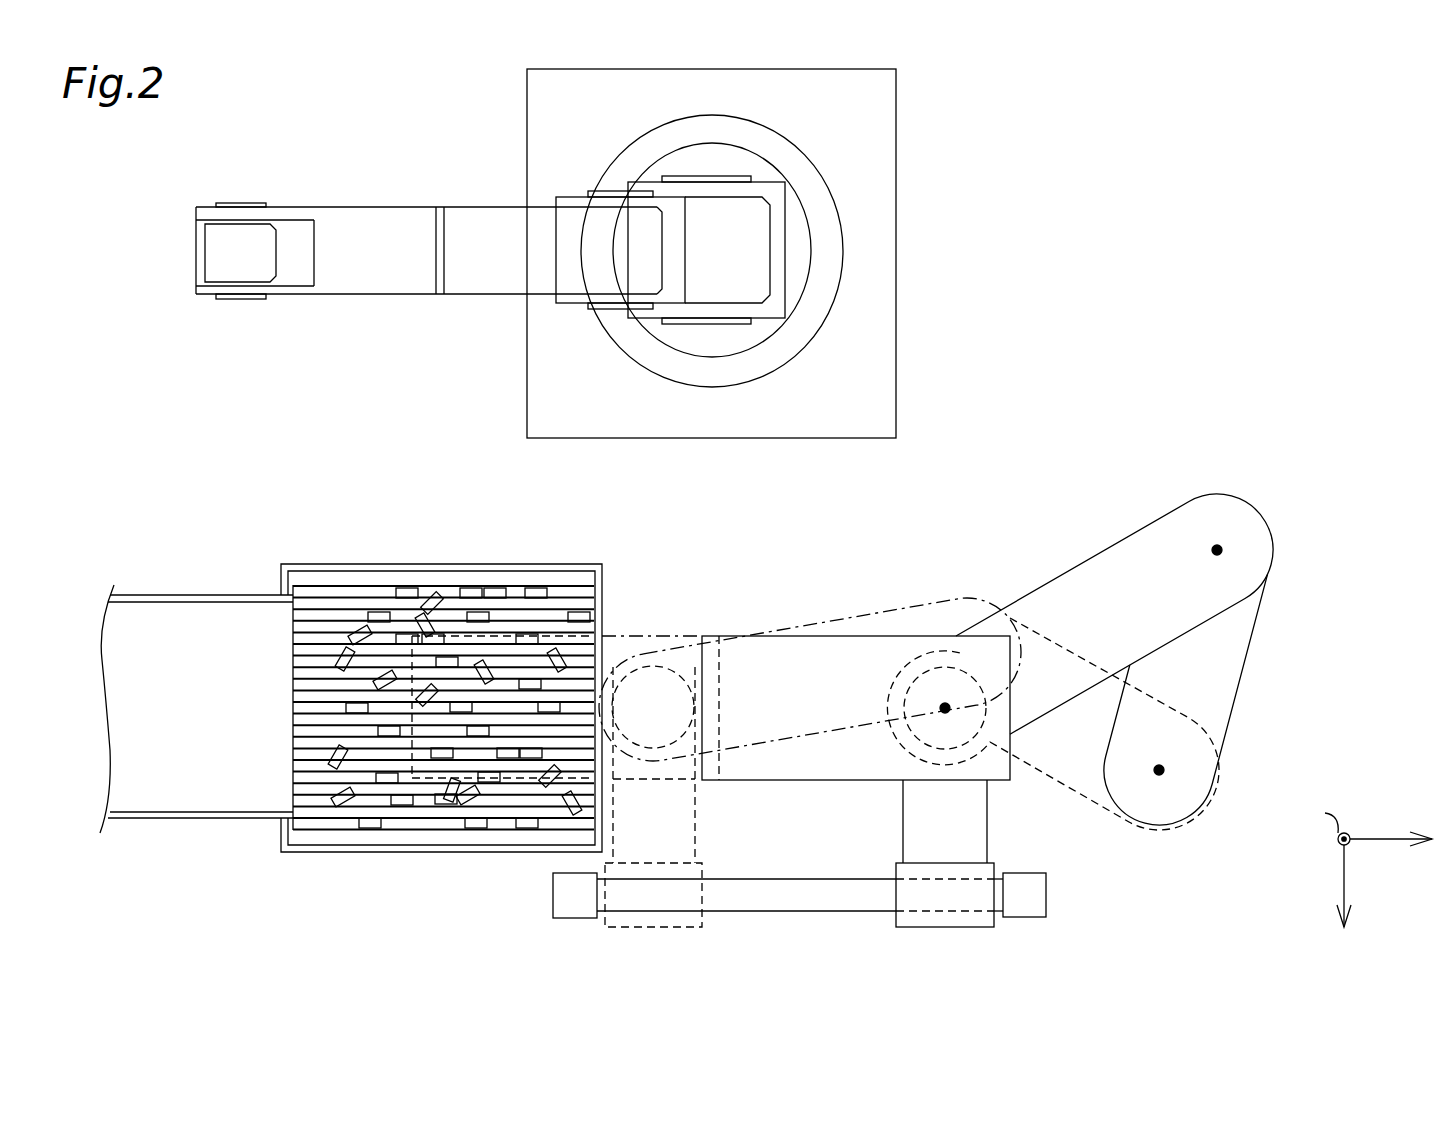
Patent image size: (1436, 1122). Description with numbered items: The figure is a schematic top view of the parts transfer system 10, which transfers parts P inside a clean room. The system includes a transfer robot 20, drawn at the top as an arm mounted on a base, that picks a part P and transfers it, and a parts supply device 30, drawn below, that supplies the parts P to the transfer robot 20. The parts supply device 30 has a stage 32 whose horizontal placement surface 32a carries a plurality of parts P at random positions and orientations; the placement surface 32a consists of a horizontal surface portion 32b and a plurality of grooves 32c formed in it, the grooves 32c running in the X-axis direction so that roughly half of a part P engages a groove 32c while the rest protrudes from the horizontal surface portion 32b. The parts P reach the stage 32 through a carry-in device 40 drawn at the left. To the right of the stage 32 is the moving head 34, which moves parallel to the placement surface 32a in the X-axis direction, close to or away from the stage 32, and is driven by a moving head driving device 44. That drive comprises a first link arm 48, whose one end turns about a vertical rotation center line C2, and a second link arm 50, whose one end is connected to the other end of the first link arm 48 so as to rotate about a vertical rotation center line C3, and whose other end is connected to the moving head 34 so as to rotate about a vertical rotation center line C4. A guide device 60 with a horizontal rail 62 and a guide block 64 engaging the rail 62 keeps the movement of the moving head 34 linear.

The parts transfer system 10 is at (1125, 192).
The transfer robot 20 is at (400, 267).
The parts supply device 30 is at (372, 478).
The stage 32 is at (510, 562).
The placement surface 32a is at (380, 672).
The horizontal surface portion 32b is at (398, 578).
The grooves 32c is at (303, 638).
The parts P is at (542, 588).
The moving head 34 is at (800, 723).
The carry-in device 40 is at (190, 820).
The moving head driving device 44 is at (1305, 590).
The first link arm 48 is at (1205, 698).
The second link arm 50 is at (1115, 638).
The guide device 60 is at (737, 852).
The rail 62 is at (772, 887).
The guide block 64 is at (895, 872).
The rotation center line C2 is at (1159, 770).
The rotation center line C3 is at (1217, 550).
The rotation center line C4 is at (945, 708).